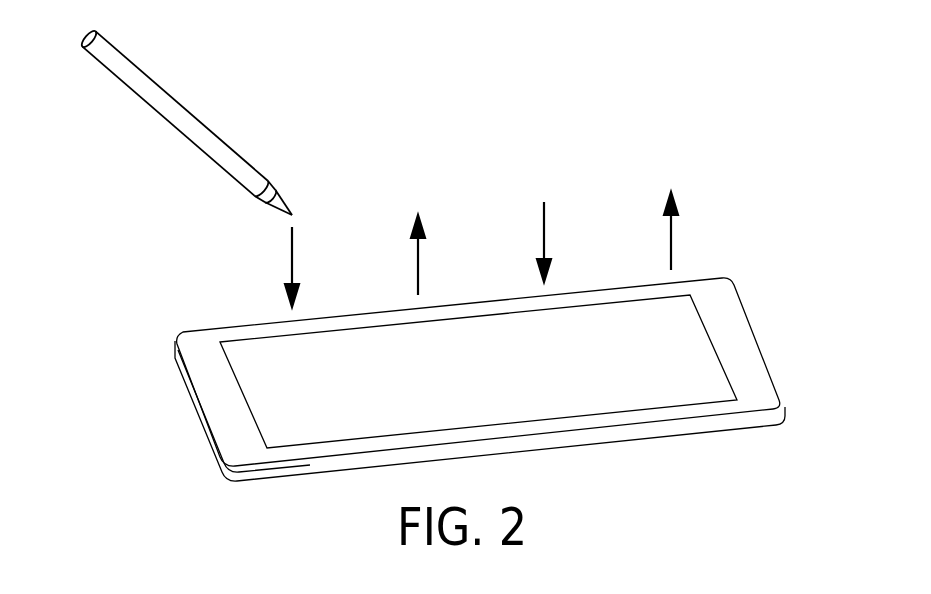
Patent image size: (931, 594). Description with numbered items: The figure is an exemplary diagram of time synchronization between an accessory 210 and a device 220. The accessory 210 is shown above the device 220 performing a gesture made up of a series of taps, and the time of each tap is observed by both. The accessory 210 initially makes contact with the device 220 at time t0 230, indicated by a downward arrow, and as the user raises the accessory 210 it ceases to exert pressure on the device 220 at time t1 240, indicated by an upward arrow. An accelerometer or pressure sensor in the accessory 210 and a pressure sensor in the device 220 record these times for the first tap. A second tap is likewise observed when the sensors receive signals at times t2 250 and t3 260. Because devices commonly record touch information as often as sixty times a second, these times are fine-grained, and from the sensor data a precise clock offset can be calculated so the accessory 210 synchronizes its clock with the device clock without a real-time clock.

The accessory 210 is at (193, 141).
The device 220 is at (192, 330).
The time t0 230 is at (293, 147).
The time t1 240 is at (418, 135).
The time t2 250 is at (545, 123).
The time t3 260 is at (670, 112).